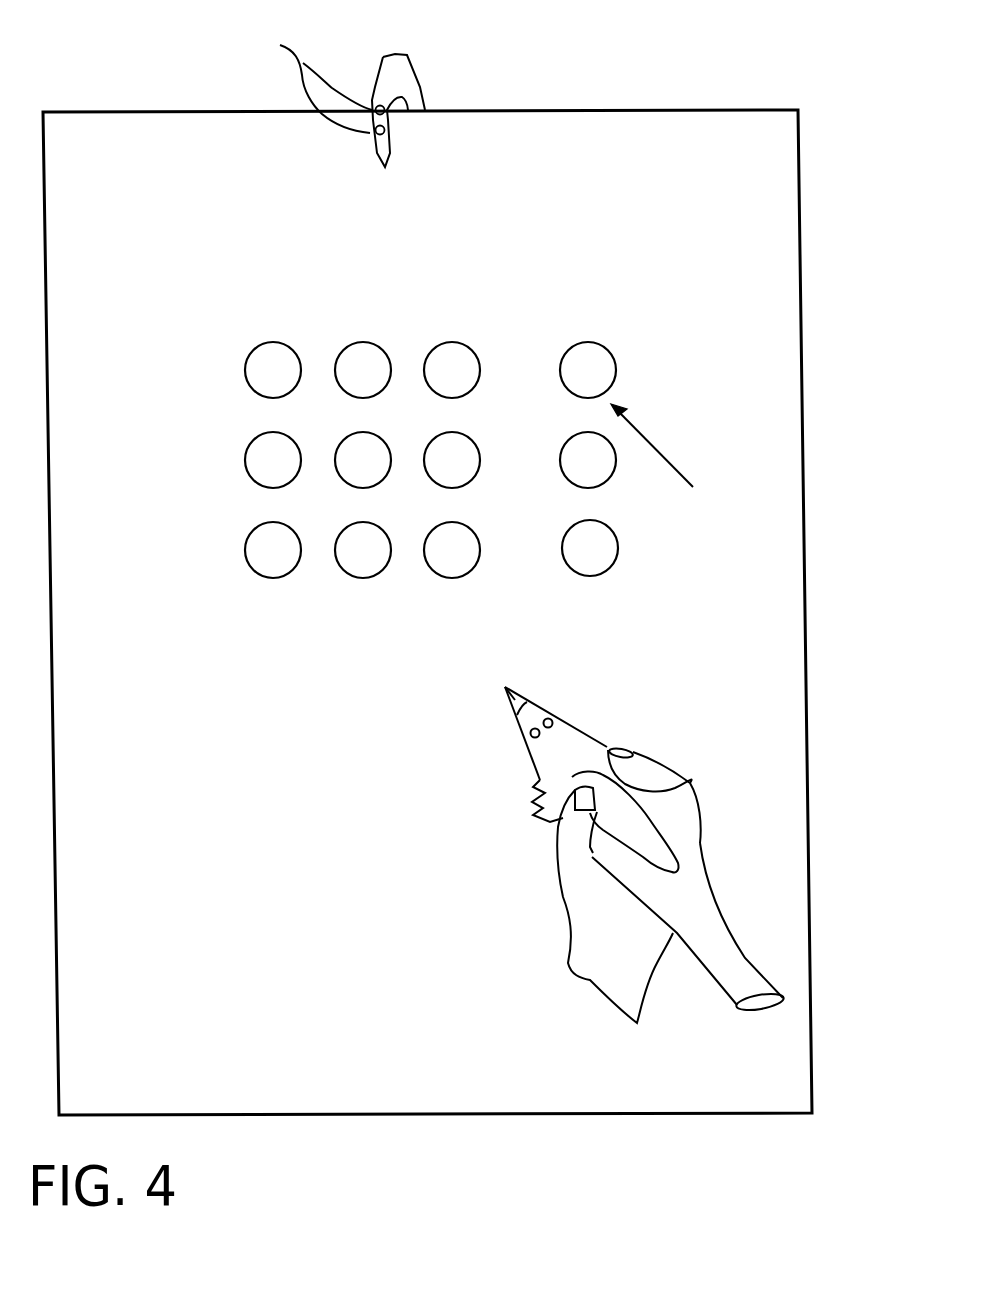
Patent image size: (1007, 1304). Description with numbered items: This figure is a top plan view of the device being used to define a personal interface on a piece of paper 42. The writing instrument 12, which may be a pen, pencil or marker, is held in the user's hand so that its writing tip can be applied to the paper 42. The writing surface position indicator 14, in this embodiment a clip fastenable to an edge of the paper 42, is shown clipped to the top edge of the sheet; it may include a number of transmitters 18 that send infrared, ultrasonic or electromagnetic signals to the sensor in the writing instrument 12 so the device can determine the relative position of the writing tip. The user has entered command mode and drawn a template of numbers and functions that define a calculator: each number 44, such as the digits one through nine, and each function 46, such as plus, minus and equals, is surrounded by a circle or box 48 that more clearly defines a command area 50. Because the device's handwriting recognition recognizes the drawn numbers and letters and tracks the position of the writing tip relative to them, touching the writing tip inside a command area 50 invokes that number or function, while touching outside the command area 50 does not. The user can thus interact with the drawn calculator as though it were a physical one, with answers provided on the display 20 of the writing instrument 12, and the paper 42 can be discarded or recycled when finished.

The writing instrument 12 is at (702, 917).
The writing surface position indicator 14 is at (406, 83).
The transmitters 18 is at (301, 79).
The display 20 is at (627, 818).
The paper 42 is at (638, 148).
The number 44 is at (245, 373).
The function 46 is at (592, 370).
The circle or box 48 is at (617, 378).
The command area 50 is at (680, 458).